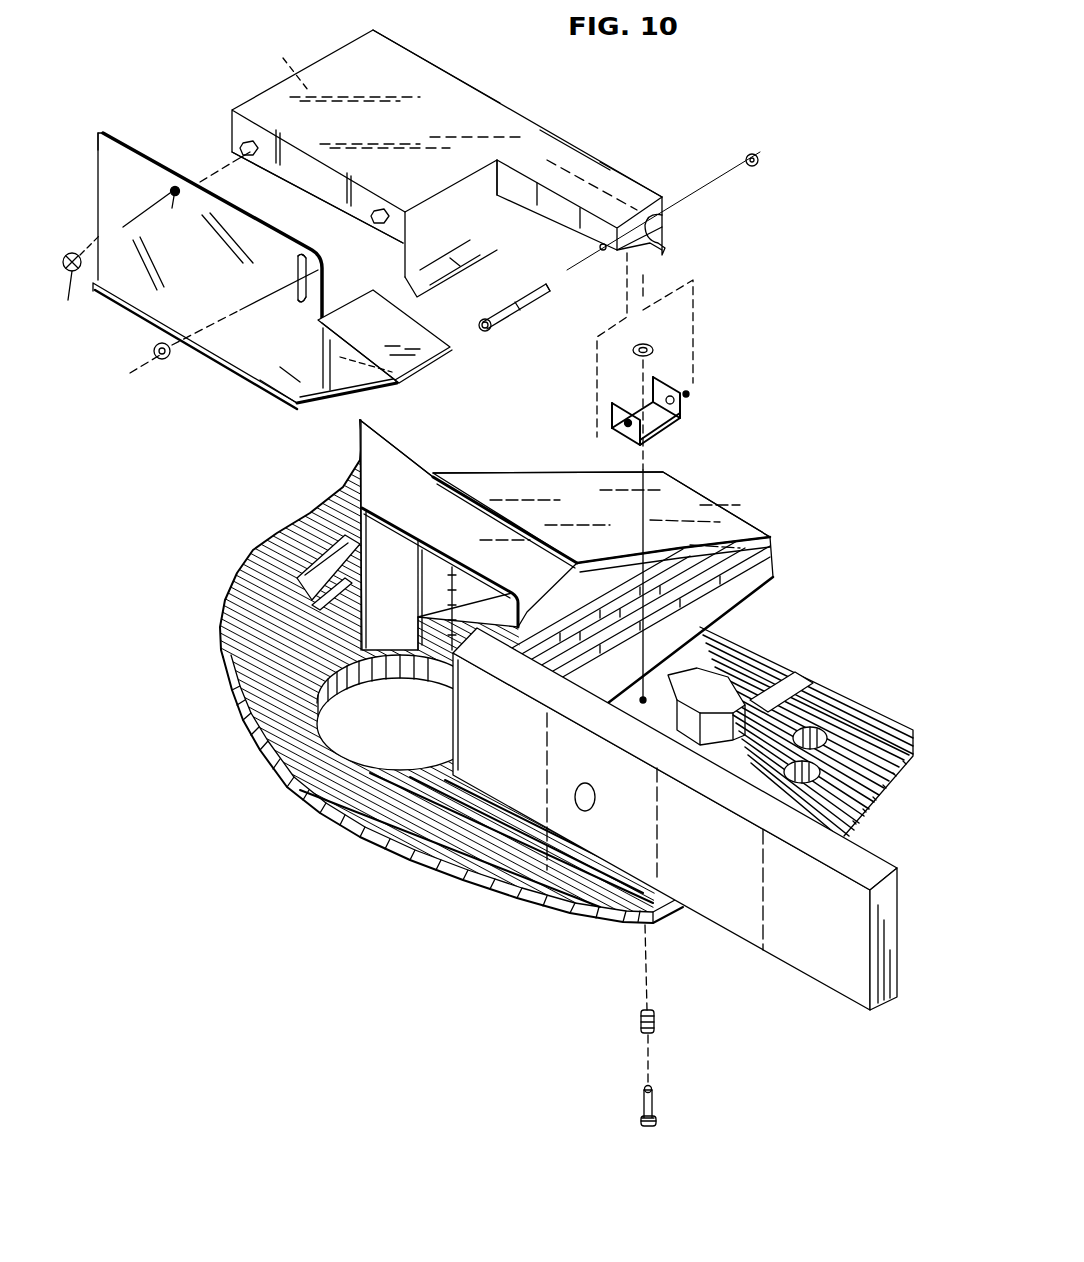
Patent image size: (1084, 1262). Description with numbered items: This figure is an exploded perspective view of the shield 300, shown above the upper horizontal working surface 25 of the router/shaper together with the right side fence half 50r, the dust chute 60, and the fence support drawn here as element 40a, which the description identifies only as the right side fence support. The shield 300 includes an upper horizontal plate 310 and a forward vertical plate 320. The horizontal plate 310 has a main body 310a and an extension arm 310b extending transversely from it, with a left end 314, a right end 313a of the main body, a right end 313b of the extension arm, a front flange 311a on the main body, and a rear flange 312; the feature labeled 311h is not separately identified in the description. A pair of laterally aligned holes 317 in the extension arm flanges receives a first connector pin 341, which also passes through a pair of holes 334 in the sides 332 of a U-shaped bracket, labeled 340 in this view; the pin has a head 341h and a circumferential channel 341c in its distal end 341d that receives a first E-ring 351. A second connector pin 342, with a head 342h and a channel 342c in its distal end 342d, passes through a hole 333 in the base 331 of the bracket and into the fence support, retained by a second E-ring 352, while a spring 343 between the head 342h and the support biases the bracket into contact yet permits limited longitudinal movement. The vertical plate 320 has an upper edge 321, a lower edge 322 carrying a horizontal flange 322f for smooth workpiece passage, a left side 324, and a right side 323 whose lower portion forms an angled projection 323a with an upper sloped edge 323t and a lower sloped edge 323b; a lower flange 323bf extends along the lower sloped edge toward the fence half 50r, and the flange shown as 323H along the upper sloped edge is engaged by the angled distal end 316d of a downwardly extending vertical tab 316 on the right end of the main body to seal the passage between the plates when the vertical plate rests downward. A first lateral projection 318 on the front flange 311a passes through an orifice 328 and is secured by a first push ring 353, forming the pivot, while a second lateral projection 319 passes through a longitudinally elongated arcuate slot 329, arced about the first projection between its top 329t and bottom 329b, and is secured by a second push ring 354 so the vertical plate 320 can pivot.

The shield 300 is at (203, 52).
The horizontal plate 310 is at (395, 139).
The main body 310a is at (425, 75).
The extension arm 310b is at (593, 167).
The front flange on main body of horizontal plate 311a is at (318, 196).
The flange hole 311h is at (572, 240).
The rear flange on horizontal plate 312 is at (630, 193).
The right end of main body 313a is at (665, 218).
The right end of extension arm 313b is at (482, 215).
The left end of horizontal plate 314 is at (290, 61).
The vertical tab 316 is at (462, 197).
The distal end of vertical tab 316d is at (455, 262).
The pair of laterally aligned holes in extension arm 317 is at (652, 246).
The first lateral projection 318 is at (240, 143).
The second lateral projection 319 is at (384, 209).
The vertical plate 320 is at (224, 282).
The upper edge of vertical plate 321 is at (215, 197).
The lower edge of vertical plate 322 is at (142, 335).
The flange along lower edge of vertical plate 322f is at (280, 397).
The right side of vertical plate 323 is at (325, 283).
The horizontal panel 323H is at (400, 339).
The angled projection on right side of vertical plate 323a is at (322, 372).
The lower sloped edge of angled projection 323b is at (375, 393).
The lower sloped edge flange 323bf is at (330, 410).
The upper sloped edge of angled projection 323t is at (405, 378).
The left side of vertical plate 324 is at (100, 140).
The orifice through vertical plate 328 is at (173, 208).
The arcuate slot through vertical plate 329 is at (294, 292).
The top of arcuate slot 329t is at (306, 256).
The bottom of arcuate slot 329b is at (298, 304).
The base of bracket 331 is at (658, 443).
The sides of bracket 332 is at (678, 420).
The hole through base of bracket 333 is at (640, 400).
The pair of holes through sides of bracket 334 is at (600, 431).
The clip 340 is at (600, 408).
The first connector pin 341 is at (515, 312).
The head on first connector pin 341h is at (477, 327).
The circumferential channel in first connector pin 341c is at (530, 298).
The distal end of first connector pin 341d is at (545, 290).
The second connector pin 342 is at (642, 1110).
The circumferential channel in second connector pin 342c is at (655, 1090).
The distal end of second connector pin 342d is at (641, 1090).
The head on second connector pin 342h is at (645, 1126).
The spring 343 is at (653, 1022).
The first E-ring 351 is at (748, 155).
The second E-ring 352 is at (640, 345).
The first push ring 353 is at (79, 285).
The second push ring 354 is at (162, 360).
The upper horizontal working surface 25 is at (222, 658).
The support block 40a is at (600, 685).
The right side fence half 50r is at (740, 875).
The dust chute 60 is at (530, 490).